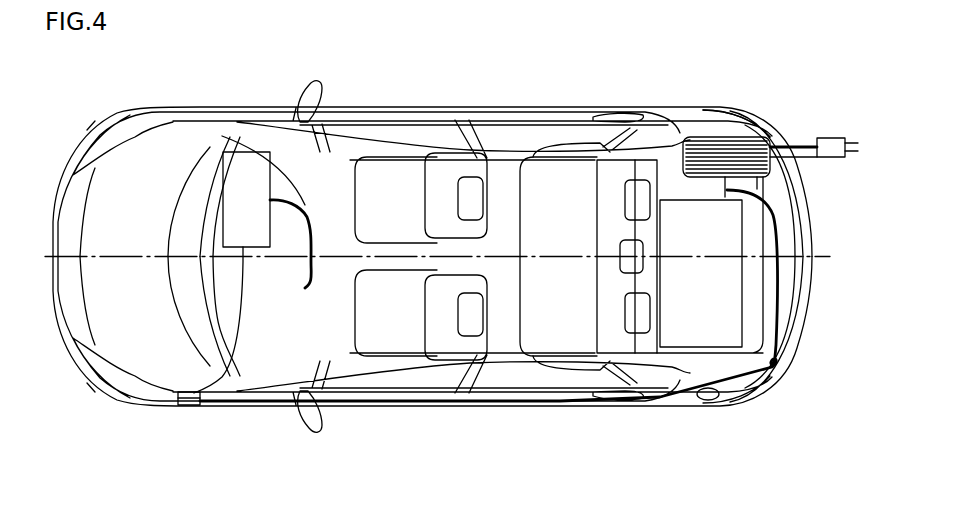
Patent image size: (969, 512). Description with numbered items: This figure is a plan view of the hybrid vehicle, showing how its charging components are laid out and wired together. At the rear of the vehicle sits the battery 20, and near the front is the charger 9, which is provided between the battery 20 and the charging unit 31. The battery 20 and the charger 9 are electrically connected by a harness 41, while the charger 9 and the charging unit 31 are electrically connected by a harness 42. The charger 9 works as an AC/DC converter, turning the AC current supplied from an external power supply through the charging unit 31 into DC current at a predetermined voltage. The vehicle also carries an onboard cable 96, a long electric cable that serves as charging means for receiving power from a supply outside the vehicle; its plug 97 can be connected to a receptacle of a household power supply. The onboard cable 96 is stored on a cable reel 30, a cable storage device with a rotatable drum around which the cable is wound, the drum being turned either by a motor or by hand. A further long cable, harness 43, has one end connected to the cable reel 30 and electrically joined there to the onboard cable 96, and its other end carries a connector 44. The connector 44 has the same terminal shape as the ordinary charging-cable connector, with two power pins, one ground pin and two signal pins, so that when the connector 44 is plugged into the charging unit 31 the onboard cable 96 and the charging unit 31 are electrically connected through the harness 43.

The charger 9 is at (186, 170).
The battery 20 is at (700, 347).
The cable reel 30 is at (758, 130).
The charging unit 31 is at (178, 403).
The harness 41 is at (312, 205).
The harness 42 is at (246, 320).
The harness 43 is at (509, 405).
The connector 44 is at (193, 407).
The onboard cable 96 is at (693, 140).
The plug 97 is at (831, 137).